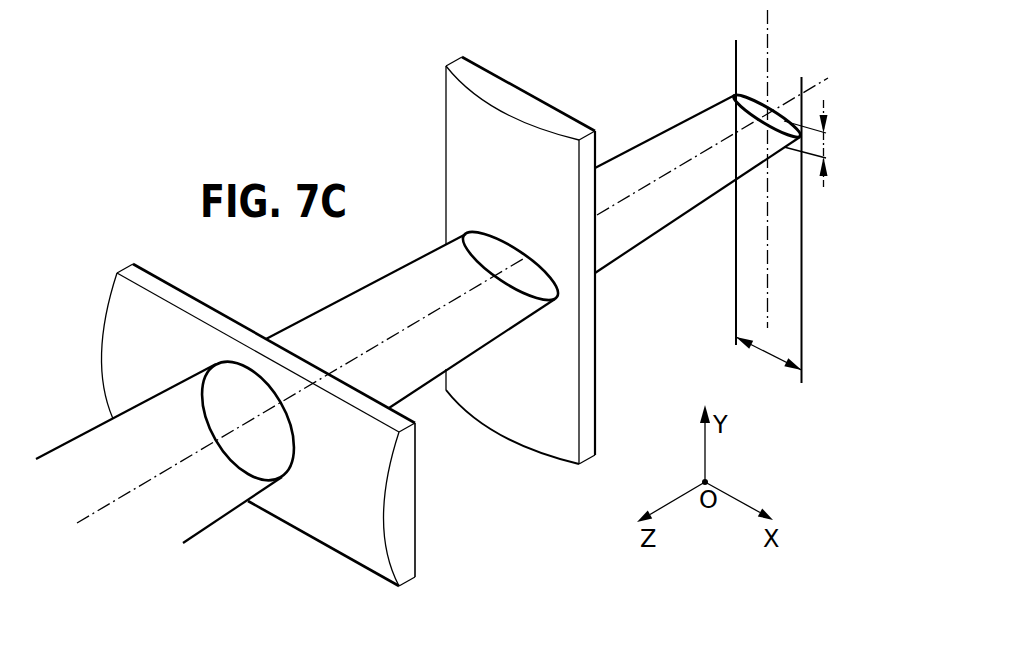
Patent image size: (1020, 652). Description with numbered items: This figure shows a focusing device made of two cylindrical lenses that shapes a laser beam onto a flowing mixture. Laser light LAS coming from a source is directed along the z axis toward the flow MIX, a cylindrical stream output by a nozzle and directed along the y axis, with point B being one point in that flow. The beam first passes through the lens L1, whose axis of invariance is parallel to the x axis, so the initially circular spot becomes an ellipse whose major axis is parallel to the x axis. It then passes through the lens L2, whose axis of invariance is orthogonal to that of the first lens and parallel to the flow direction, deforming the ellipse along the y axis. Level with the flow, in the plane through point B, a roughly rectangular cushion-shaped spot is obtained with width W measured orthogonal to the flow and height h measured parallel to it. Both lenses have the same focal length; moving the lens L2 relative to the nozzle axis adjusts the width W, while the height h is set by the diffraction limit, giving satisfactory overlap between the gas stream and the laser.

The laser light LAS is at (70, 457).
The lens L1 is at (403, 483).
The lens L2 is at (557, 125).
The flow MIX is at (792, 262).
The point B is at (766, 112).
The height h is at (815, 143).
The width W is at (769, 362).